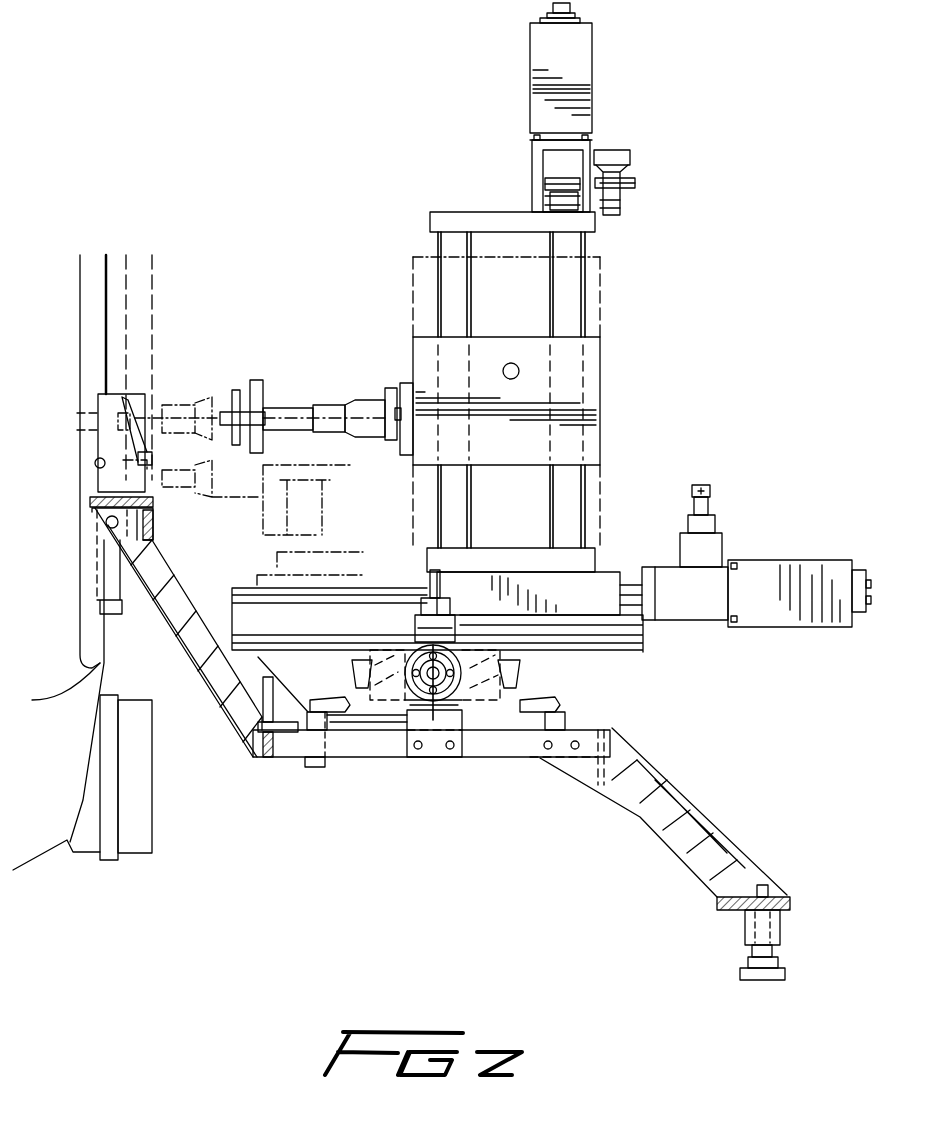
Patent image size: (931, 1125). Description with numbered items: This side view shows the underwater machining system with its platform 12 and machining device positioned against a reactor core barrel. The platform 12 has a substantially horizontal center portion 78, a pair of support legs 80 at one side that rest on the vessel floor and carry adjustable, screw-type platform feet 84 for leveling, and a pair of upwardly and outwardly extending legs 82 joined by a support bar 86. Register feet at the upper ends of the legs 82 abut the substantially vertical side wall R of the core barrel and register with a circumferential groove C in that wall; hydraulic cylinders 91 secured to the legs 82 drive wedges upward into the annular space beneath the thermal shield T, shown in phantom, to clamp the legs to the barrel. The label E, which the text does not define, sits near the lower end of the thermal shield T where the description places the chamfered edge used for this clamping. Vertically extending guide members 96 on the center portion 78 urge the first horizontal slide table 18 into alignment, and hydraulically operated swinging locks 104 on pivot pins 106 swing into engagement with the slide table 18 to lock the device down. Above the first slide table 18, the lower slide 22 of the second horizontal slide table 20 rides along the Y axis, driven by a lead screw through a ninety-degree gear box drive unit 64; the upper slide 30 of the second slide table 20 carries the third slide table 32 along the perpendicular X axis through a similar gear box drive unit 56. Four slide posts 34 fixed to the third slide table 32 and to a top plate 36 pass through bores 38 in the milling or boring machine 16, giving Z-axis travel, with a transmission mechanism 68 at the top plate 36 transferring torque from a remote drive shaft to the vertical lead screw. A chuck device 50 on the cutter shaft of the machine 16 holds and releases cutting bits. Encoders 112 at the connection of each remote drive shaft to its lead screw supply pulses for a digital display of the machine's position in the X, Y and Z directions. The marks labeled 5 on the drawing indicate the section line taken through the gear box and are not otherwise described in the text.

The encoder 112 is at (592, 82).
The transmission mechanism 68 is at (622, 170).
The top plate 36 is at (488, 218).
The slide posts 34 is at (565, 247).
The milling or boring machine 16 is at (527, 352).
The bores 38 is at (590, 417).
The chuck device 50 is at (388, 437).
The support bar 86 is at (152, 522).
The upwardly and outwardly extending legs 82 is at (160, 561).
The upper slide 30 is at (388, 598).
The third slide table 32 is at (570, 604).
The second horizontal slide table 20 is at (437, 620).
The lead screw 5 is at (417, 632).
The lower slide 22 is at (530, 672).
The pins 106 is at (318, 692).
The swinging locks 104 is at (328, 708).
The hydraulic cylinders 91 is at (122, 592).
The platform 12 is at (274, 790).
The horizontal center portion 78 is at (288, 750).
The first horizontal slide table 18 is at (398, 750).
The guide members 96 is at (437, 752).
The second 90 degree gear box drive unit 64 is at (467, 690).
The 90 degree gear box drive unit 56 is at (683, 603).
The support legs 80 is at (690, 823).
The adjustable platform feet 84 is at (782, 929).
The side wall of core barrel R is at (88, 345).
The thermal shield T is at (142, 344).
The engagement point E is at (128, 450).
The circumferential groove C is at (100, 468).